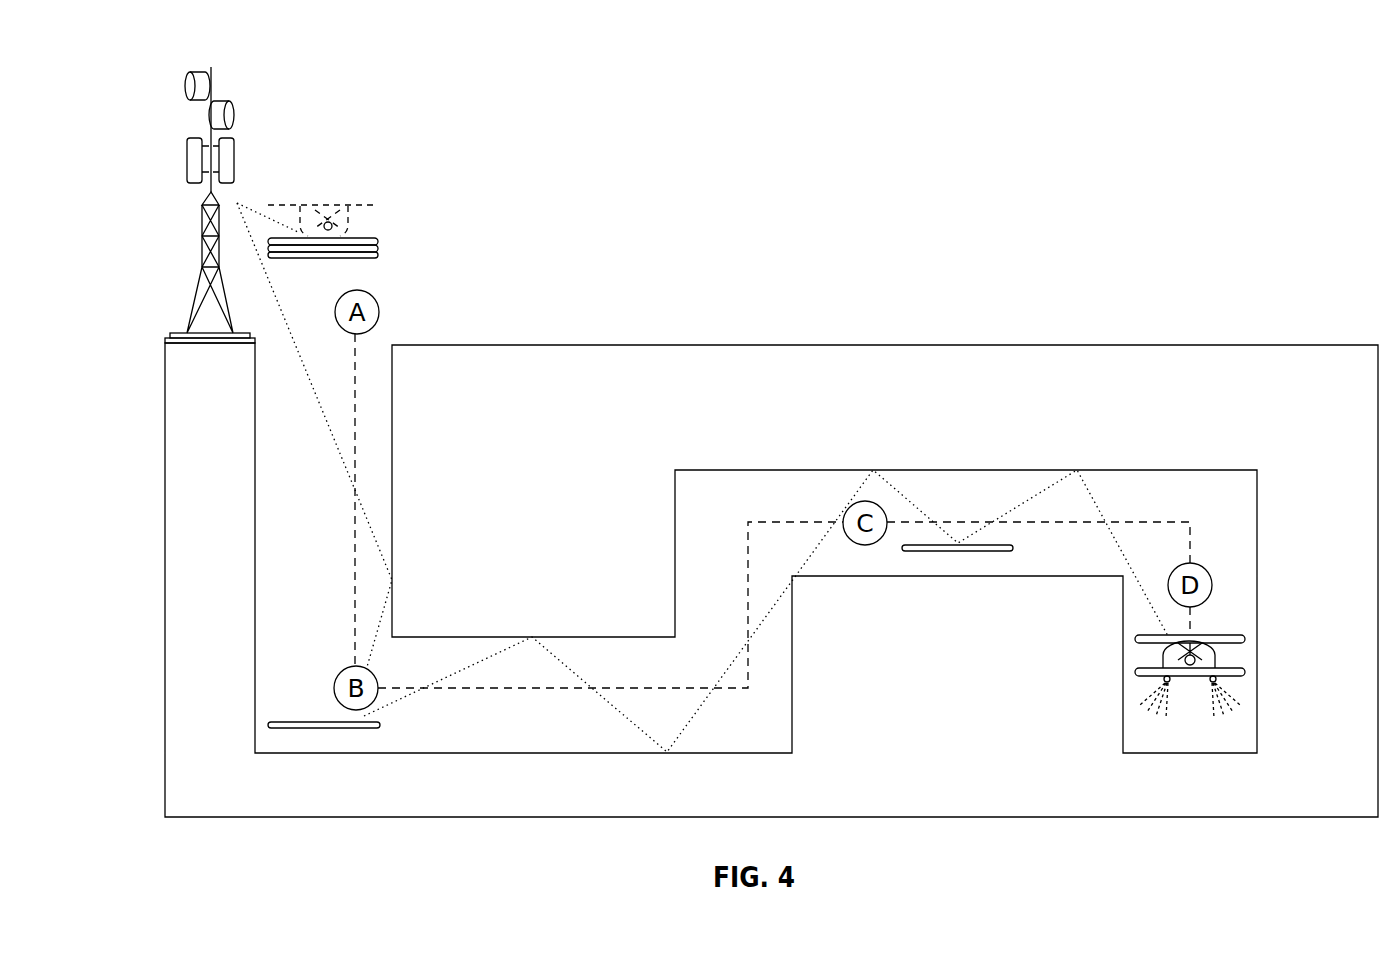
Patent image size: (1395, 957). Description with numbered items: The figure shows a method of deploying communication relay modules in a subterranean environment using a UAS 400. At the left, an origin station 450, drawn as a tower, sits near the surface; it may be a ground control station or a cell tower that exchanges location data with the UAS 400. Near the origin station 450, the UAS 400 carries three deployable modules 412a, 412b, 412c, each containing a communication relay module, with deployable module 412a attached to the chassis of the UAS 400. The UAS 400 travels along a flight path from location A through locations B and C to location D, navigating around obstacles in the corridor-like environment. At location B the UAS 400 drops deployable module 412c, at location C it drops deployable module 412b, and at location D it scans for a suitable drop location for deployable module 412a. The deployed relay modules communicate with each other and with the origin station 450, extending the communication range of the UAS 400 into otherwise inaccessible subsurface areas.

The origin station 450 is at (167, 145).
The UAS 400 is at (312, 192).
The deployable module 412a is at (373, 234).
The deployable module 412b is at (379, 246).
The deployable module 412c is at (379, 255).